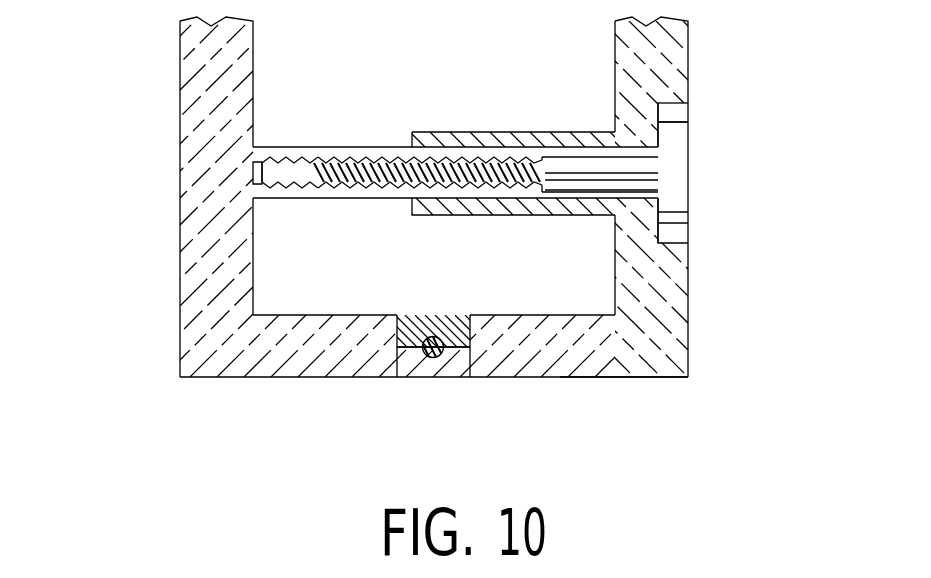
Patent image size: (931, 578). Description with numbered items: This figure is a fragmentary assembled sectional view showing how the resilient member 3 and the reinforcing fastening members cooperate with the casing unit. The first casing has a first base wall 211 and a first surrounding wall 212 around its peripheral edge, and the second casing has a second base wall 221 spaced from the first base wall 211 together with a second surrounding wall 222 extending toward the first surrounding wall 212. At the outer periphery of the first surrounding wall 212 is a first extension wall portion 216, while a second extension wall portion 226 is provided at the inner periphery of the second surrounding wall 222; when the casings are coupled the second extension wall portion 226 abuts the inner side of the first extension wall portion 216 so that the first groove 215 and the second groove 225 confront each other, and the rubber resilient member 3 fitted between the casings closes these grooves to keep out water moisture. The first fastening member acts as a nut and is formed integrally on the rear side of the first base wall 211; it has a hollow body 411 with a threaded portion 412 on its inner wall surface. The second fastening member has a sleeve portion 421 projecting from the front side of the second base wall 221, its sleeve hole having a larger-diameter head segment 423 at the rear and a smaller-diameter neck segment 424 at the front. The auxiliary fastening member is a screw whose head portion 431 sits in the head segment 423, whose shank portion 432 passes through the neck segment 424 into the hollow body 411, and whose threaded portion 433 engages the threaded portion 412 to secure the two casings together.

The resilient member 3 is at (433, 357).
The first base wall 211 is at (180, 185).
The first surrounding wall 212 is at (213, 378).
The first groove 215 is at (436, 357).
The first extension wall portion 216 is at (430, 357).
The second base wall 221 is at (688, 312).
The second surrounding wall 222 is at (620, 378).
The second groove 225 is at (443, 337).
The second extension wall portion 226 is at (421, 333).
The hollow body 411 is at (285, 150).
The threaded portion 412 is at (285, 175).
The sleeve portion 421 is at (443, 135).
The head segment 423 is at (673, 110).
The neck segment 424 is at (507, 160).
The head portion 431 is at (673, 178).
The shank portion 432 is at (590, 175).
The threaded portion 433 is at (375, 165).